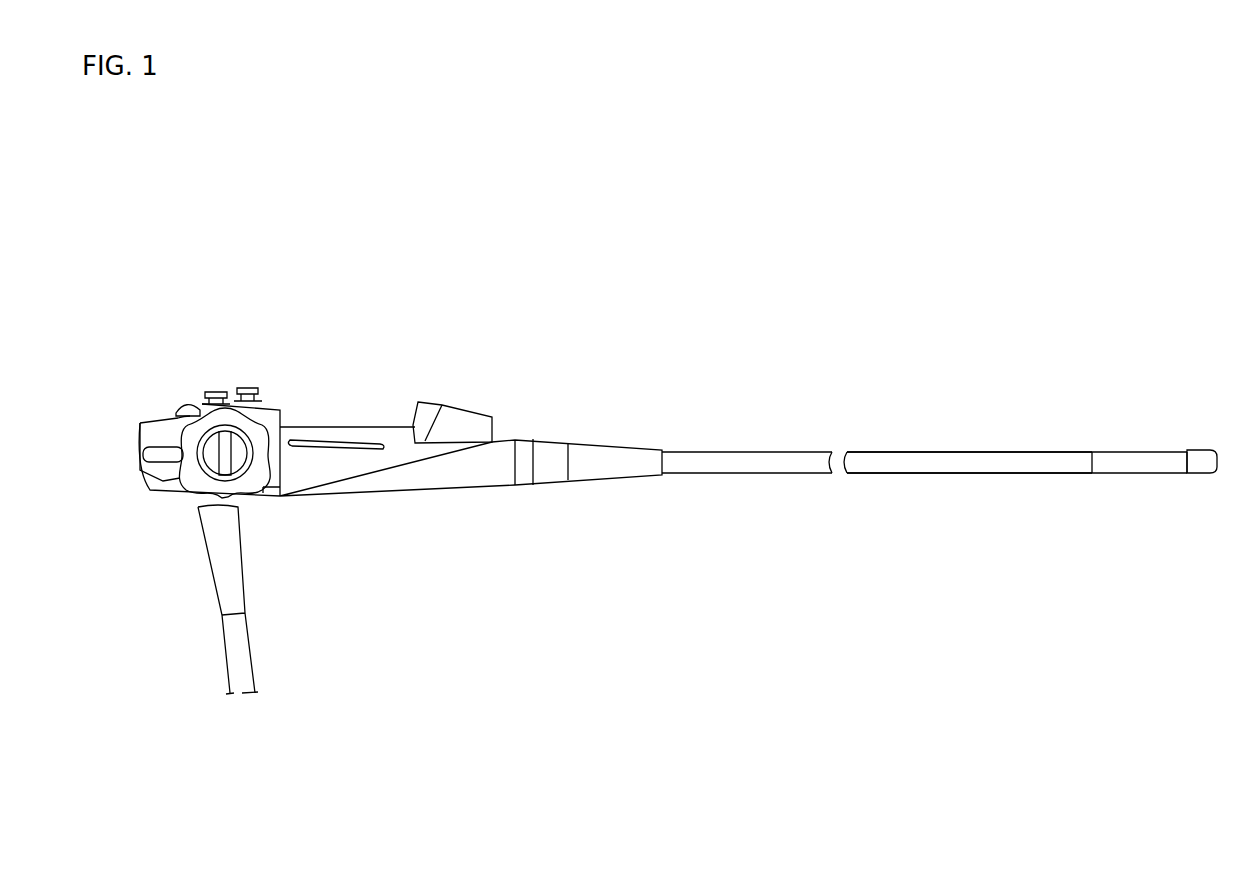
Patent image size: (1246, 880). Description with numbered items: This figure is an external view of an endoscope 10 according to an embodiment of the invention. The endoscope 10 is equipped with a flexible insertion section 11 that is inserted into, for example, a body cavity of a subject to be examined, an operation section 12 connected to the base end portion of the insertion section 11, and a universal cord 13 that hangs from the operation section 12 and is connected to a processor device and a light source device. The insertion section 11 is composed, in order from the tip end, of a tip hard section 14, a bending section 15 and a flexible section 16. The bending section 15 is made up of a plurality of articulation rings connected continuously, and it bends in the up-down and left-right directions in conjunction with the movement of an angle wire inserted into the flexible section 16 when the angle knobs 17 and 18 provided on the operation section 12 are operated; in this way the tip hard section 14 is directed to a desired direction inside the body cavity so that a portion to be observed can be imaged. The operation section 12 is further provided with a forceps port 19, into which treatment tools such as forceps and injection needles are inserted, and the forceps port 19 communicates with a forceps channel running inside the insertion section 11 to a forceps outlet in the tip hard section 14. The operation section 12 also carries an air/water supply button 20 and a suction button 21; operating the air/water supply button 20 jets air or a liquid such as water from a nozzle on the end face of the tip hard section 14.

The endoscope 10 is at (633, 483).
The insertion section 11 is at (958, 452).
The operation section 12 is at (347, 427).
The universal cord 13 is at (218, 582).
The tip hard section 14 is at (1202, 473).
The bending section 15 is at (1112, 453).
The flexible section 16 is at (977, 467).
The angle knob 17 is at (163, 425).
The angle knob 18 is at (190, 402).
The forceps port 19 is at (416, 400).
The air/water supply button 20 is at (210, 388).
The suction button 21 is at (246, 385).